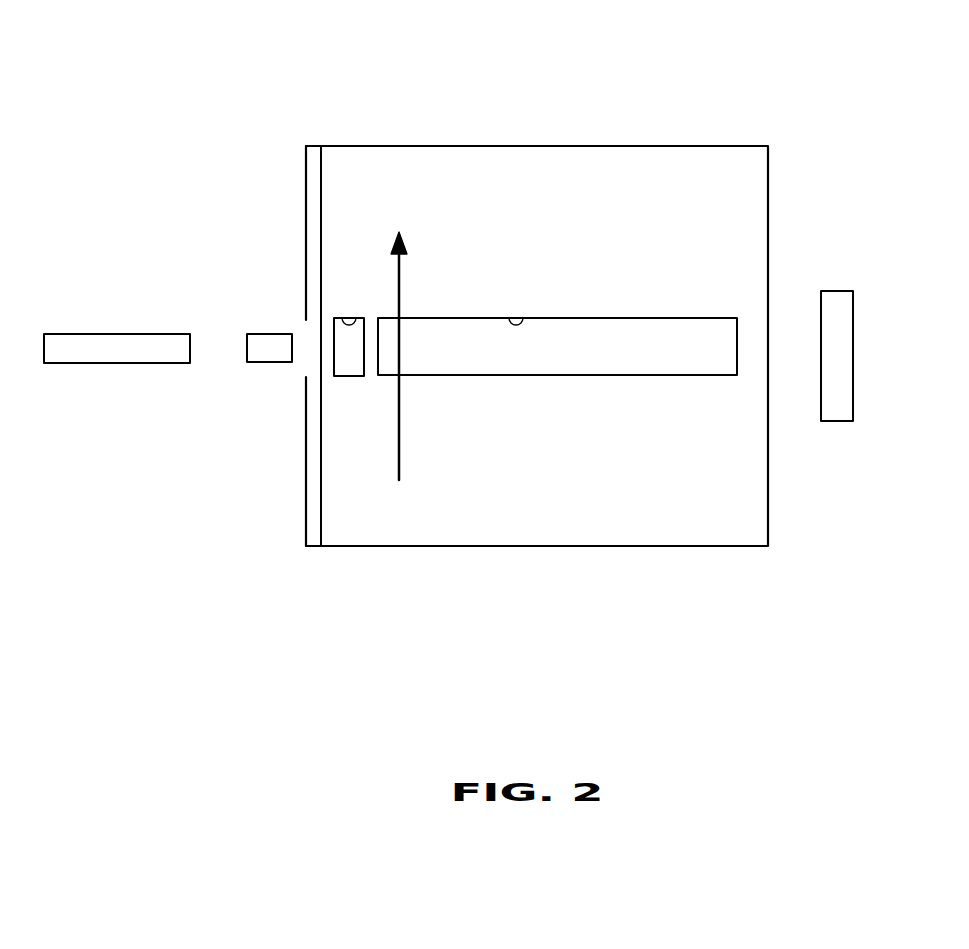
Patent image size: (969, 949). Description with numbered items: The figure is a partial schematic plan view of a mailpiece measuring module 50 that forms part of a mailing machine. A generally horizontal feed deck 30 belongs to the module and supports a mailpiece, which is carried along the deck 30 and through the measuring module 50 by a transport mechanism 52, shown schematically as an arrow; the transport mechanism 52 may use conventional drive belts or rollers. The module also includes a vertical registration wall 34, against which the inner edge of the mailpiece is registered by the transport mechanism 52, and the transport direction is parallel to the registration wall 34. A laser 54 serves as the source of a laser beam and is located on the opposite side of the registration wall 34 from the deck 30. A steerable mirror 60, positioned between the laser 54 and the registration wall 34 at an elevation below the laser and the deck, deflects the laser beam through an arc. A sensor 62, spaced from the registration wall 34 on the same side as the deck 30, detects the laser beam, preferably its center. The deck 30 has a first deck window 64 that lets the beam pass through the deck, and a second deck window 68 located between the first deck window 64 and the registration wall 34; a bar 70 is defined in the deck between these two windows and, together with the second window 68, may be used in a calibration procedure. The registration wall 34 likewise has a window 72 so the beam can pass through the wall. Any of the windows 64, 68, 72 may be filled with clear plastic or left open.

The feed deck 30 is at (565, 546).
The registration wall 34 is at (306, 504).
The mailpiece measuring module 50 is at (218, 135).
The transport mechanism 52 is at (399, 452).
The laser 54 is at (130, 340).
The steerable mirror 60 is at (260, 363).
The sensor 62 is at (838, 291).
The first deck window 64 is at (522, 318).
The second deck window 68 is at (355, 318).
The bar 70 is at (334, 360).
The window 72 is at (306, 323).